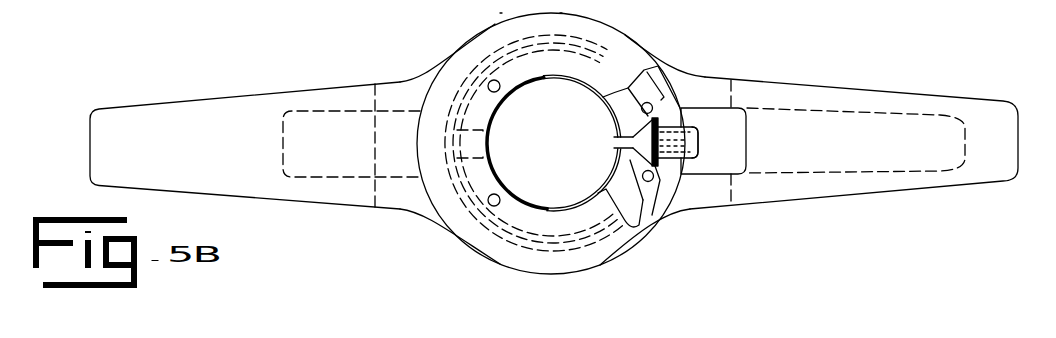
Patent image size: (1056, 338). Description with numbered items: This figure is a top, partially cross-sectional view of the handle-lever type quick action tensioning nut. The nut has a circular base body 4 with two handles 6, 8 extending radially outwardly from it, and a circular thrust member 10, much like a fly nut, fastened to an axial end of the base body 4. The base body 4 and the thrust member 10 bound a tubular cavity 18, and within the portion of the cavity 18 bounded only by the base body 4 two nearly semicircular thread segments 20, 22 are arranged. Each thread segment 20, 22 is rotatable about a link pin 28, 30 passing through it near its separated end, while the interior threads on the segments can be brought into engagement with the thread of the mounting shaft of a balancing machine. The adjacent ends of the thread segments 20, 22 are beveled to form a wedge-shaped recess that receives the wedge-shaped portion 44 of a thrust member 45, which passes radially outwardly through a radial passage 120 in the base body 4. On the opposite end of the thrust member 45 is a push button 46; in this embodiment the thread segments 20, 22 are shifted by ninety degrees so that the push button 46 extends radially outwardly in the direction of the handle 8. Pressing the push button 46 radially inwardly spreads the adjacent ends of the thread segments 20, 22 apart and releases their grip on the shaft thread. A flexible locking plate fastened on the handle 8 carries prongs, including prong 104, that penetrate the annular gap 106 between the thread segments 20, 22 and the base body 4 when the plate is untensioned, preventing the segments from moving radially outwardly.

The base body 4 is at (635, 50).
The handle 6 is at (232, 104).
The handle 8 is at (933, 96).
The thrust member 10 is at (470, 8).
The tubular cavity 18 is at (517, 7).
The thread segment 20 is at (553, 78).
The thread segment 22 is at (584, 190).
The link pin 28 is at (489, 82).
The link pin 30 is at (491, 204).
The wedge-shaped portion 44 is at (653, 121).
The thrust member 45 is at (698, 139).
The push button 46 is at (682, 158).
The prong 104 is at (658, 173).
The annular gap 106 is at (633, 203).
The radial passage 120 is at (686, 128).